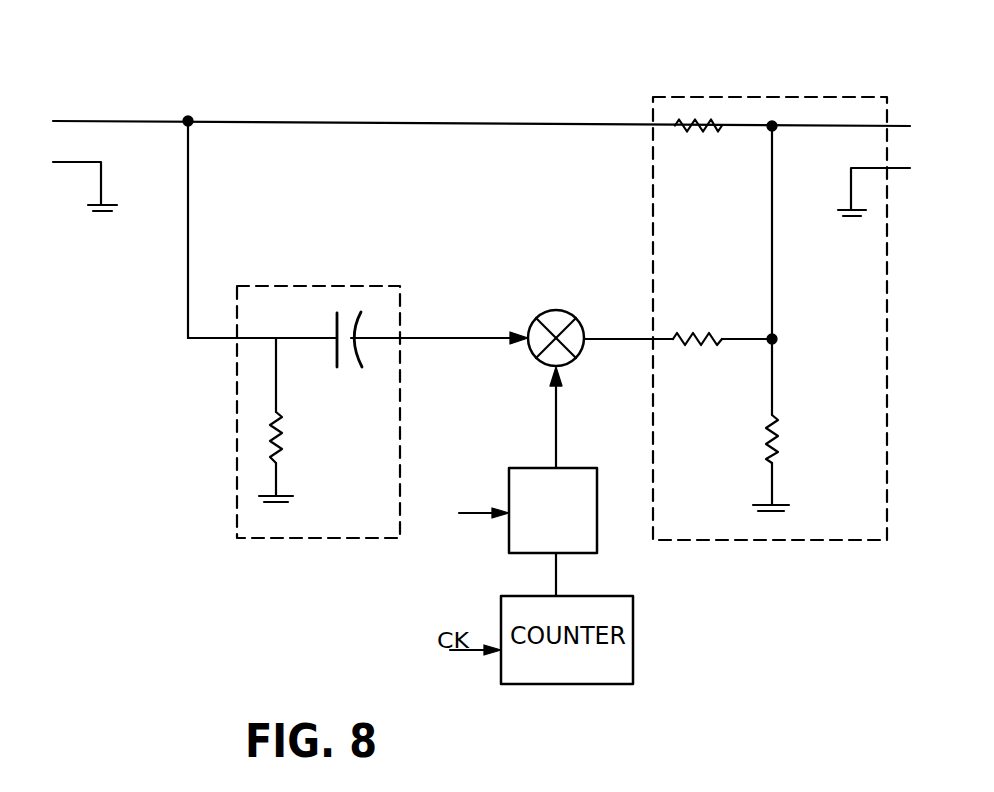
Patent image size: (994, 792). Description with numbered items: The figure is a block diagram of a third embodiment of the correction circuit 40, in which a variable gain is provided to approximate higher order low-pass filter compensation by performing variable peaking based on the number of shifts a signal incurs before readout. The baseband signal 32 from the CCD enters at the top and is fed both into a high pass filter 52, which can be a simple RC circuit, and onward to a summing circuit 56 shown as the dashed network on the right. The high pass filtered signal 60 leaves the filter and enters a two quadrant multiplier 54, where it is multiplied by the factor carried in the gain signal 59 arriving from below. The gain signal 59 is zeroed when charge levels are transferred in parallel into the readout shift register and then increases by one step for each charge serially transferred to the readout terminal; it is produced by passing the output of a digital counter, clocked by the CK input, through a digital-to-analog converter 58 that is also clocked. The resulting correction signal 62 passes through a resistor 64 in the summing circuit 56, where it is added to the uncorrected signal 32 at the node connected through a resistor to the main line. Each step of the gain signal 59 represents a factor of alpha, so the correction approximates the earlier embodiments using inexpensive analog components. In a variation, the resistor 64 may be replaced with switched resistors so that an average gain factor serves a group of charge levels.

The correction circuit 40 is at (498, 73).
The baseband signal 32 is at (108, 121).
The high pass filter 52 is at (286, 280).
The two quadrant multiplier 54 is at (552, 310).
The summing circuit 56 is at (771, 96).
The digital-to-analog converter 58 is at (598, 511).
The gain signal 59 is at (557, 411).
The high pass filtered signal 60 is at (441, 337).
The correction signal 62 is at (612, 337).
The resistor 64 is at (701, 337).